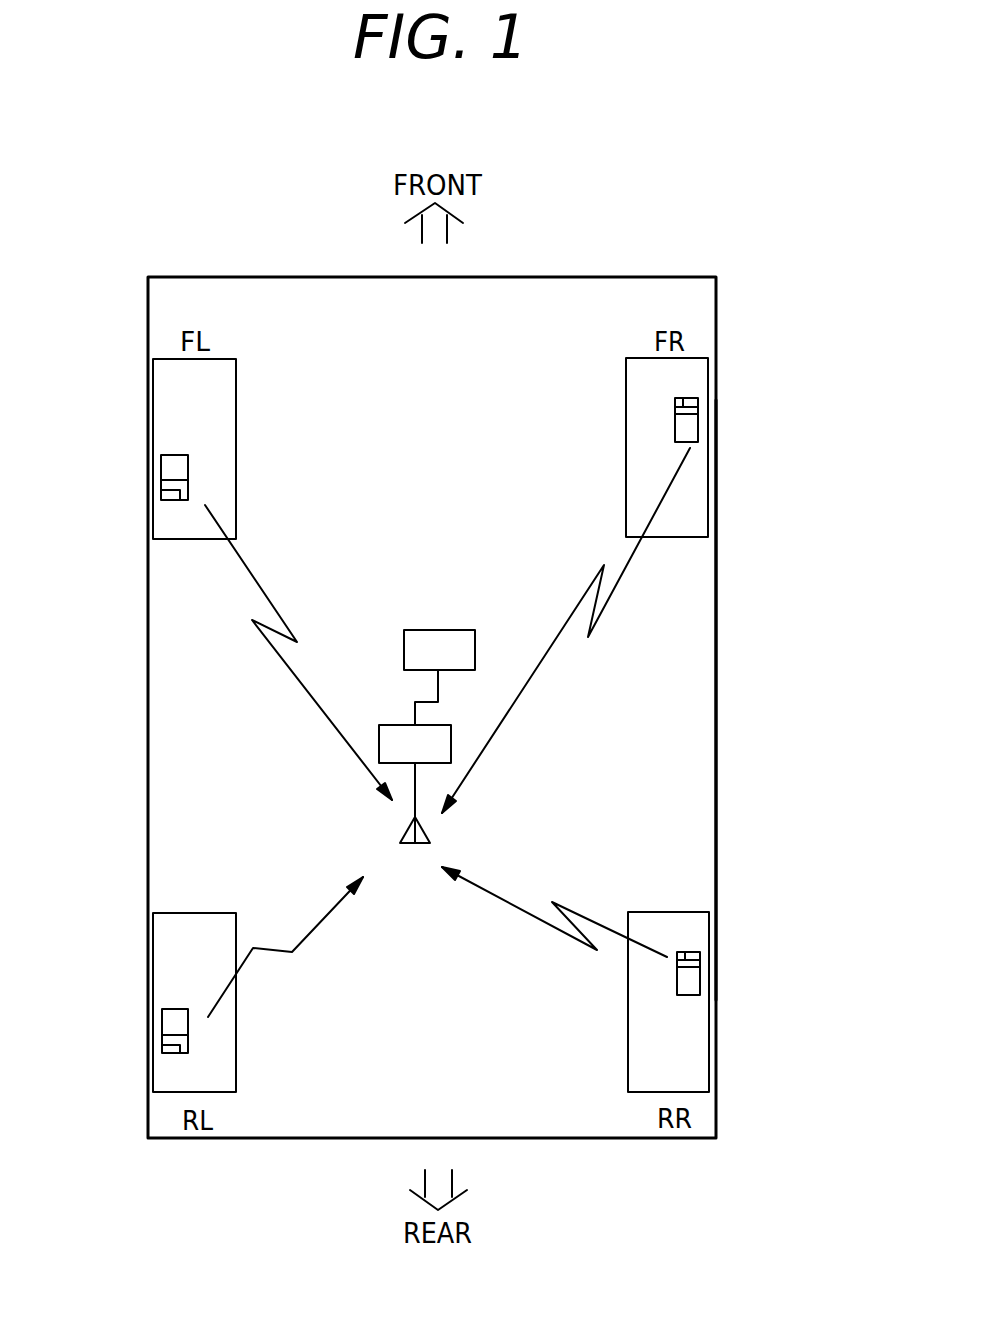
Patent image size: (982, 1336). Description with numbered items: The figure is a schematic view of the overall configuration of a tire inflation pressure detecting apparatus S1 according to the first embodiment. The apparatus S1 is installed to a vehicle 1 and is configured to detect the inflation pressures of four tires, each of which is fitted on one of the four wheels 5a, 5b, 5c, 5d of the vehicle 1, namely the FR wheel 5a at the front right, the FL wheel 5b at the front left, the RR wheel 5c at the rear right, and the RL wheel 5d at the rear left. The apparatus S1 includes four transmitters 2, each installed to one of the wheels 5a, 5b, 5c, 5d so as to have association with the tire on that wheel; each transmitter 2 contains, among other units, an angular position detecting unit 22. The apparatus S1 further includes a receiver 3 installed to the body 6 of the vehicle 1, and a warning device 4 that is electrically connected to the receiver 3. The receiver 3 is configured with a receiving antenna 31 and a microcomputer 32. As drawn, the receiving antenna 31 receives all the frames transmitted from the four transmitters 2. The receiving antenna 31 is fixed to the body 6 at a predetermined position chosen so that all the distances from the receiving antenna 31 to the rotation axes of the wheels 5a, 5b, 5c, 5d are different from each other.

The tire inflation pressure detecting apparatus S1 is at (745, 202).
The vehicle 1 is at (650, 272).
The transmitter 2 is at (165, 455).
The angular position detecting unit 22 is at (175, 500).
The receiver 3 is at (433, 701).
The warning device 4 is at (447, 630).
The receiving antenna 31 is at (430, 835).
The microcomputer 32 is at (392, 725).
The FR wheel 5a is at (709, 527).
The FL wheel 5b is at (153, 528).
The RR wheel 5c is at (710, 1080).
The RL wheel 5d is at (153, 1082).
The body 6 is at (719, 843).